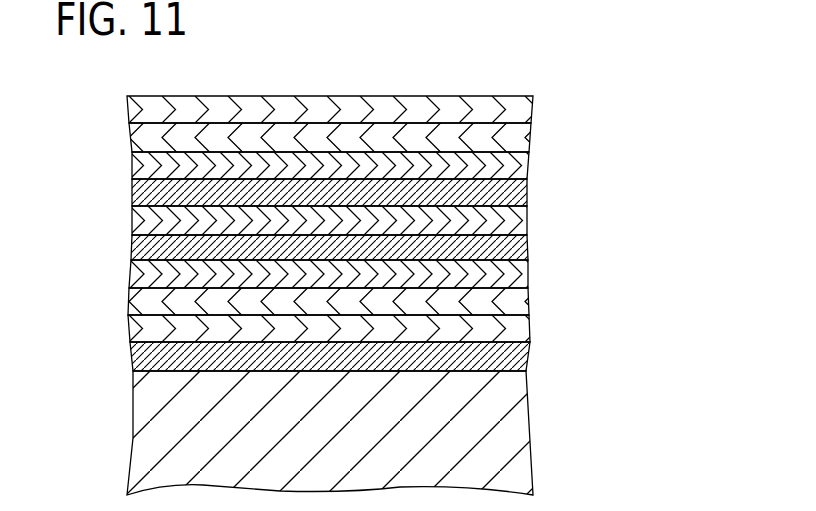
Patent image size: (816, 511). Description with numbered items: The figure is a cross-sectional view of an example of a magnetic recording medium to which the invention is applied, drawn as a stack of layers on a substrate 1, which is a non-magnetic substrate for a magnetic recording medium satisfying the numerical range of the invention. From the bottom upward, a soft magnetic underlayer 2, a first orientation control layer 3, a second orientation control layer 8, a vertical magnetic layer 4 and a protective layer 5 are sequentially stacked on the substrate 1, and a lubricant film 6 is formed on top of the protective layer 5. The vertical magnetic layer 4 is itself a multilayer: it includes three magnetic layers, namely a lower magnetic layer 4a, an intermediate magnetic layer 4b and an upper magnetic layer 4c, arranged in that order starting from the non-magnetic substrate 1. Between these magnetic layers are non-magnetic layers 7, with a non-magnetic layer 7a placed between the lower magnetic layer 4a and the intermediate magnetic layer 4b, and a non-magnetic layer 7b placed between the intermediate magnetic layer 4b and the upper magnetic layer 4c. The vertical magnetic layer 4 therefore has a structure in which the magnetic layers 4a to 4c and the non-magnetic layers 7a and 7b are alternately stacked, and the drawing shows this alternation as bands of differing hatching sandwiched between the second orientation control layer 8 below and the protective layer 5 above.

The substrate 1 is at (508, 433).
The soft magnetic underlayer 2 is at (517, 358).
The first orientation control layer 3 is at (513, 328).
The vertical magnetic layer 4 is at (381, 217).
The lower magnetic layer 4a is at (517, 274).
The intermediate magnetic layer 4b is at (515, 222).
The upper magnetic layer 4c is at (513, 167).
The protective layer 5 is at (517, 138).
The lubricant film 6 is at (515, 112).
The non-magnetic layer 7 is at (424, 218).
The non-magnetic layer 7a is at (517, 248).
The non-magnetic layer 7b is at (513, 195).
The second orientation control layer 8 is at (515, 300).